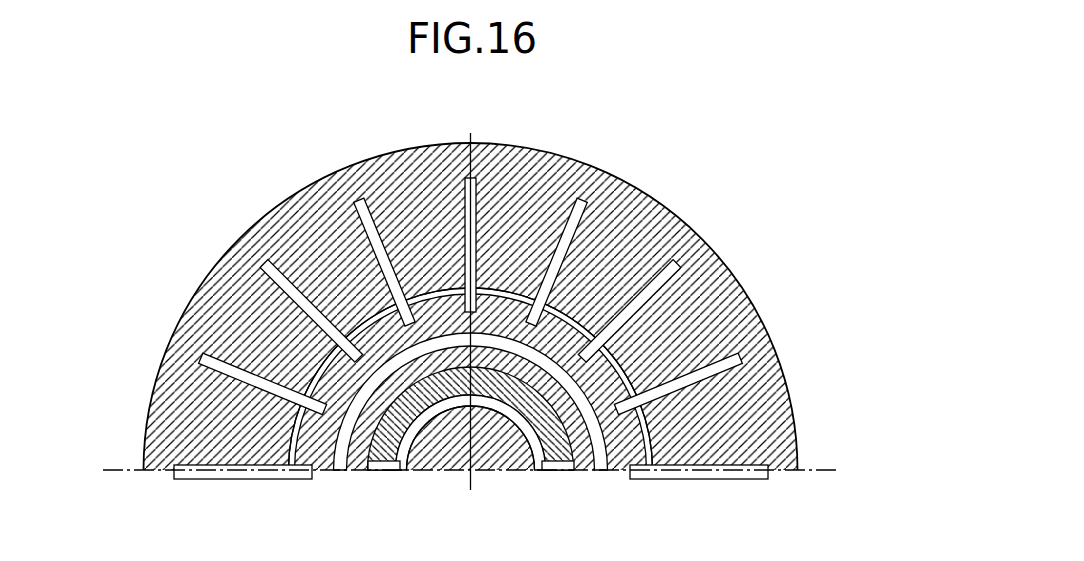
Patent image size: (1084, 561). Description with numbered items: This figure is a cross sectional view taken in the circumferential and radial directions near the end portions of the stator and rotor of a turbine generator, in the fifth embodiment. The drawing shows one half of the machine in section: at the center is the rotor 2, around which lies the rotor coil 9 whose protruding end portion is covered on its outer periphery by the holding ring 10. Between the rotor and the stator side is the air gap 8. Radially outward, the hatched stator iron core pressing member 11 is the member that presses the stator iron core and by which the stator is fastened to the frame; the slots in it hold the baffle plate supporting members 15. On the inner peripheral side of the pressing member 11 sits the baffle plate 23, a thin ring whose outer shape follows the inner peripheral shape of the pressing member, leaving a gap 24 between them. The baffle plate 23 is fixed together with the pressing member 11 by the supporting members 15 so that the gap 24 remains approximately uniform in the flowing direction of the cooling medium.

The rotor 2 is at (507, 462).
The air gap 8 is at (338, 462).
The rotor coil 9 is at (432, 383).
The holding ring 10 is at (590, 462).
The stator iron core pressing member 11 is at (532, 160).
The baffle plate supporting member 15 is at (700, 377).
The baffle plate 23 is at (640, 353).
The gap 24 is at (577, 305).